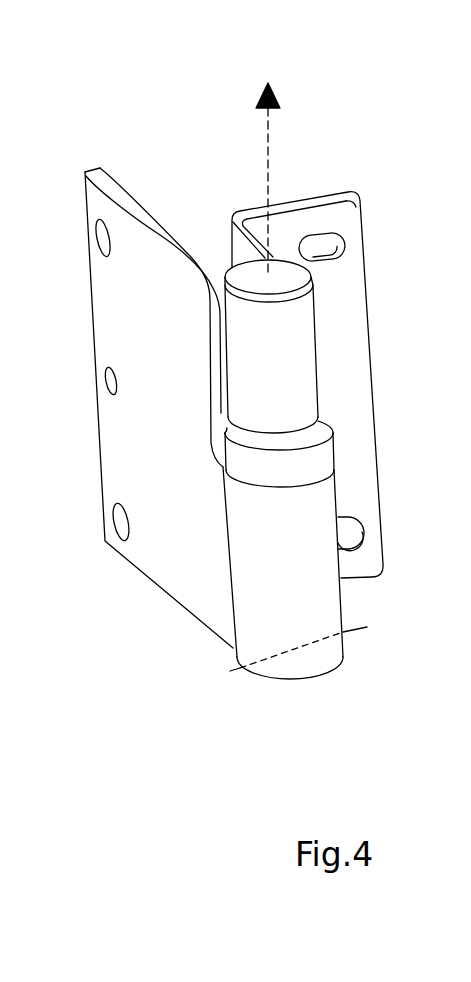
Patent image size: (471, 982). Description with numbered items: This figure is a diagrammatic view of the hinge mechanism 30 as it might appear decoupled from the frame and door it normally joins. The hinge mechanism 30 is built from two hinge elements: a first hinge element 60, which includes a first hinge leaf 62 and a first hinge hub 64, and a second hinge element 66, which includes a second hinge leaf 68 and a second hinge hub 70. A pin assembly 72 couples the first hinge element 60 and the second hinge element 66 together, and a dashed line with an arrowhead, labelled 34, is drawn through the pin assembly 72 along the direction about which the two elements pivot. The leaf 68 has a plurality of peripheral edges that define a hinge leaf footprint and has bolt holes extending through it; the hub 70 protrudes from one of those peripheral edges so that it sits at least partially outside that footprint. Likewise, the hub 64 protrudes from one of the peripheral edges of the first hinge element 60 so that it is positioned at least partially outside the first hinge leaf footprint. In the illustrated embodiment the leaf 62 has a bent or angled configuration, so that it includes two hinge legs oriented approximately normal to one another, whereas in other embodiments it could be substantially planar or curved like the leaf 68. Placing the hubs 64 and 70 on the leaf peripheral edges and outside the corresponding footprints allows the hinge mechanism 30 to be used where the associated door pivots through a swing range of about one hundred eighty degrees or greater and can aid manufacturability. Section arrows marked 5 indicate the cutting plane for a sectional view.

The hinge mechanism 30 is at (383, 165).
The hinge axis 34 is at (268, 140).
The first hinge element 60 is at (362, 255).
The first hinge leaf 62 is at (345, 296).
The first hinge hub 64 is at (318, 320).
The second hinge element 66 is at (90, 250).
The second hinge leaf 68 is at (115, 278).
The second hinge hub 70 is at (247, 560).
The pin assembly 72 is at (236, 280).
The section line 5- 5 is at (212, 652).